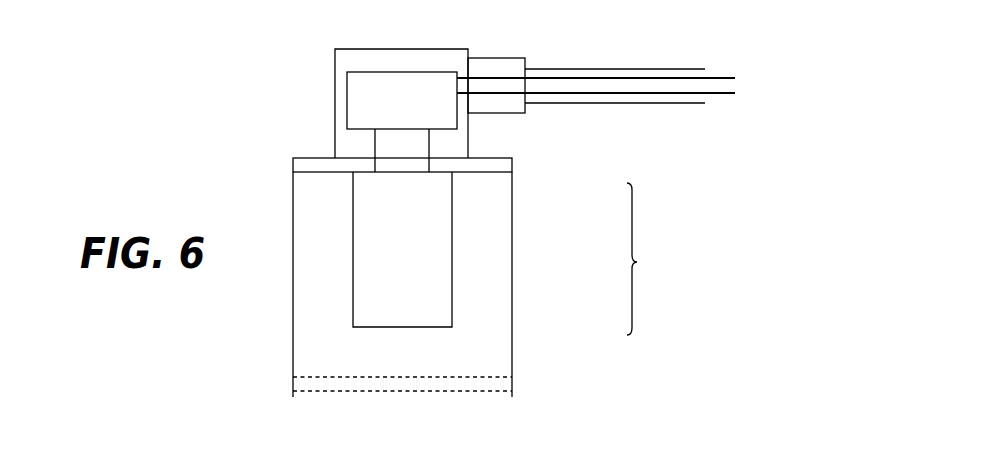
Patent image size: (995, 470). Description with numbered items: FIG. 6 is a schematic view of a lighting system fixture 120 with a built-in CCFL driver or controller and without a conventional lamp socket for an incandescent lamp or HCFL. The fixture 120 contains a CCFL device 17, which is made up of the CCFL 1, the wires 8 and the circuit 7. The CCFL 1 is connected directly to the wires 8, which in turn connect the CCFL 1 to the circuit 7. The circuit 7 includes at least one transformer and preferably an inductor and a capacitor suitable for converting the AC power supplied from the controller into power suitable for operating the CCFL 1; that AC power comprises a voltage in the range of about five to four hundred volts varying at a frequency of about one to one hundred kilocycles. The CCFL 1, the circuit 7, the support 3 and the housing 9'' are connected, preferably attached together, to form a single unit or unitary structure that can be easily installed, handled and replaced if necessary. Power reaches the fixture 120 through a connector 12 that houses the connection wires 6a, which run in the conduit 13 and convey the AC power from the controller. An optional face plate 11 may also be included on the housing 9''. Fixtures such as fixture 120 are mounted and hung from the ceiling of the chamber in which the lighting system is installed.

The CCFL 1 is at (453, 213).
The support 3 is at (514, 168).
The connection wires 6a is at (630, 79).
The circuit 7 is at (365, 85).
The wires 8 is at (427, 143).
The housing 9'' is at (435, 284).
The face plate 11 is at (354, 383).
The connector 12 is at (505, 58).
The conduit 13 is at (620, 68).
The CCFL device 17 is at (650, 259).
The fixture 120 is at (204, 382).